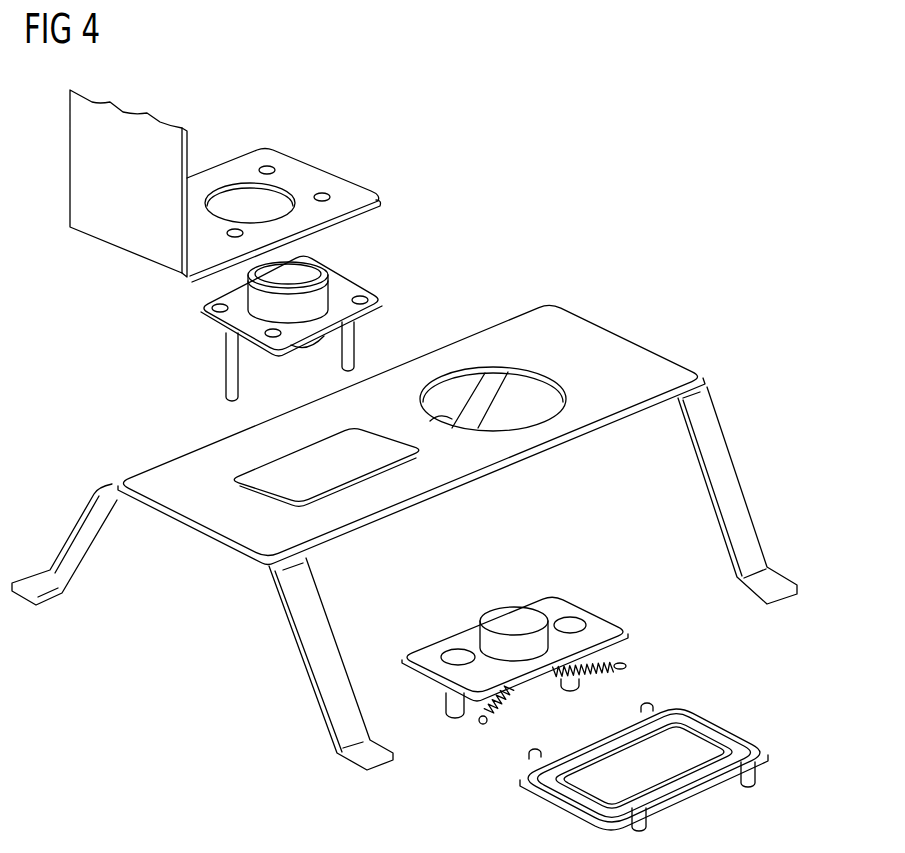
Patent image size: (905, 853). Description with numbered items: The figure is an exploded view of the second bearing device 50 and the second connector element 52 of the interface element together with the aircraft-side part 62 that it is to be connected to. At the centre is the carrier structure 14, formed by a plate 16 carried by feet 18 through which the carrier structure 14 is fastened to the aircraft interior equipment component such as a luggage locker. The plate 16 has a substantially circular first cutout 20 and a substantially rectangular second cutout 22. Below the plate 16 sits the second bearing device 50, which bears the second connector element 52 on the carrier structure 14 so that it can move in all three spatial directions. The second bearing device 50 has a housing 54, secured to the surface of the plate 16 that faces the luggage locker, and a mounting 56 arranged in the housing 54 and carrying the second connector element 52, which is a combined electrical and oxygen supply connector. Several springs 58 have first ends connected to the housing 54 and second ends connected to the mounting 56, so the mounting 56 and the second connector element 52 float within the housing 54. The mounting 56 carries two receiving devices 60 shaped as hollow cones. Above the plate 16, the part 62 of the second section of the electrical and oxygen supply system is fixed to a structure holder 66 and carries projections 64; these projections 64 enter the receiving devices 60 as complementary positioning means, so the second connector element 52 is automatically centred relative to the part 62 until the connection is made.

The carrier structure 14 is at (407, 520).
The plate 16 is at (585, 328).
The feet 18 is at (742, 506).
The first cutout 20 is at (537, 385).
The second cutout 22 is at (297, 465).
The second bearing device 50 is at (578, 690).
The second connector element 52 is at (505, 612).
The housing 54 is at (518, 782).
The mounting 56 is at (573, 610).
The springs 58 is at (505, 710).
The receiving devices 60 is at (444, 702).
The part of second section of electrical and oxygen supply system 62 is at (340, 287).
The projections 64 is at (230, 368).
The structure holder 66 is at (302, 170).